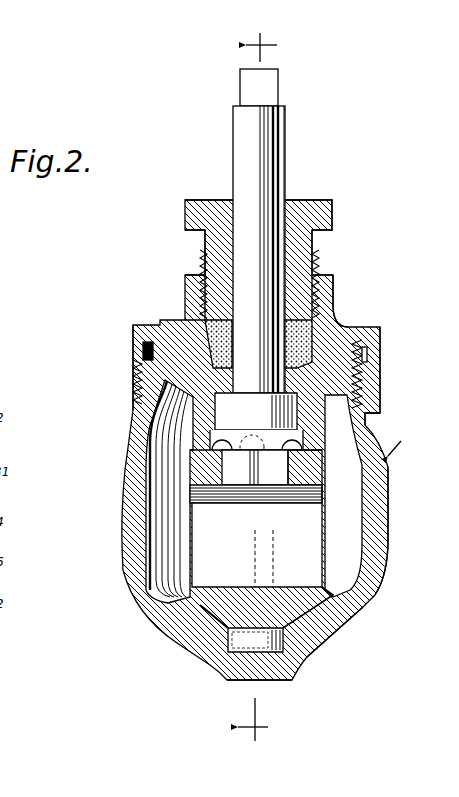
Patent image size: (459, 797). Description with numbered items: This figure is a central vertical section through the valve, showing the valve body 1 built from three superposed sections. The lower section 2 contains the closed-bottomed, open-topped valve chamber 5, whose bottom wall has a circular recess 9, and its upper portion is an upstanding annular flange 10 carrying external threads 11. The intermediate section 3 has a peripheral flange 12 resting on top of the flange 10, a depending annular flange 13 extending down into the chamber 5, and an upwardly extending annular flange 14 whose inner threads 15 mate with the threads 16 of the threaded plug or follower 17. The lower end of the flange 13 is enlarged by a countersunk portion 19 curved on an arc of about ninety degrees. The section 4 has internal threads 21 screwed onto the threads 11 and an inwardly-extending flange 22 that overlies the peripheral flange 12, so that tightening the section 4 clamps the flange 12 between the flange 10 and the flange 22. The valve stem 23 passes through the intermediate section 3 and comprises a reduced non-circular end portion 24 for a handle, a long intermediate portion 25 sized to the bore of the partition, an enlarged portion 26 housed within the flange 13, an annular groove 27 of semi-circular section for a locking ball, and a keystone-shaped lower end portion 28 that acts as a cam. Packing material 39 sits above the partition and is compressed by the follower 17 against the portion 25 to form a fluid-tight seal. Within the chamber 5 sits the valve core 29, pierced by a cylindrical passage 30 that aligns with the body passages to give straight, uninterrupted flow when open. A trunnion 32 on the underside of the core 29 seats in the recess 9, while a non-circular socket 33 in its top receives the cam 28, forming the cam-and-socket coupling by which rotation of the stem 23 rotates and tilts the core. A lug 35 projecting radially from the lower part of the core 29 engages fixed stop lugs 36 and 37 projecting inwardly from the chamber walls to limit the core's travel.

The valve body 1 is at (325, 387).
The lower section 2 is at (382, 575).
The intermediate section 3 is at (337, 319).
The section 4 is at (370, 356).
The valve chamber 5 is at (346, 521).
The circular recess 9 is at (246, 640).
The annular flange 10 is at (160, 419).
The threads 11 is at (146, 380).
The peripheral flange 12 is at (150, 345).
The depending annular flange 13 is at (306, 455).
The upwardly extending annular flange 14 is at (330, 300).
The threads 15 is at (322, 277).
The threads 16 is at (316, 254).
The threaded plug 17 is at (297, 210).
The countersunk portion 19 is at (277, 470).
The internal threads 21 is at (382, 396).
The inwardly-extending flange 22 is at (214, 352).
The valve stem 23 is at (257, 128).
The end portion 24 is at (263, 83).
The intermediate portion 25 is at (240, 212).
The enlarged portion 26 is at (256, 411).
The annular groove 27 is at (165, 450).
The lower end portion 28 is at (152, 477).
The valve core 29 is at (327, 510).
The passage 30 is at (257, 545).
The trunnion 32 is at (240, 645).
The socket 33 is at (232, 470).
The lug 35 is at (262, 569).
The stop lug 36 is at (183, 600).
The stop lug 37 is at (335, 616).
The packing material 39 is at (175, 292).